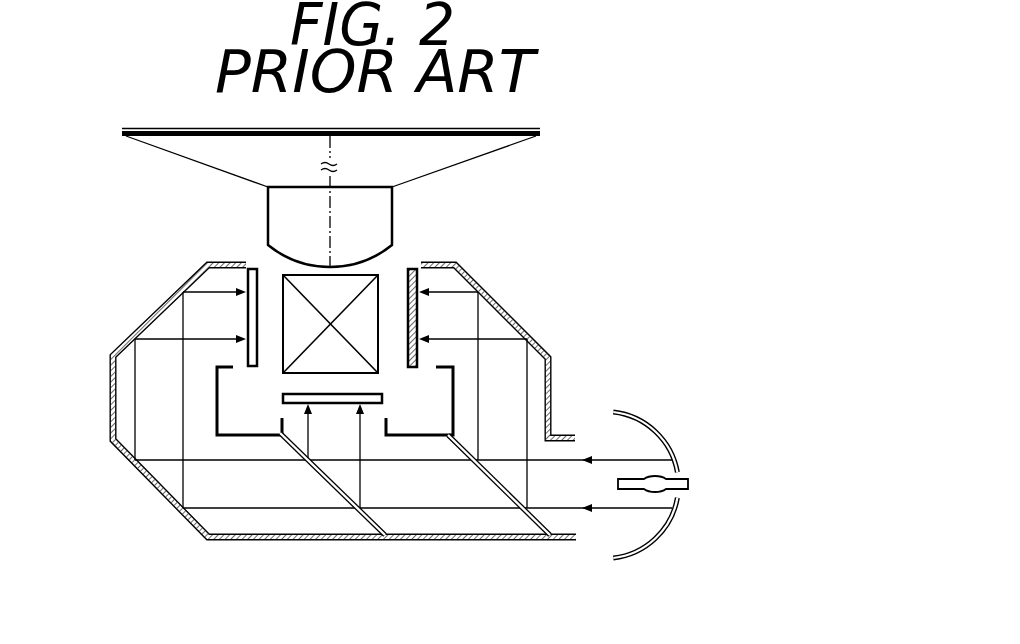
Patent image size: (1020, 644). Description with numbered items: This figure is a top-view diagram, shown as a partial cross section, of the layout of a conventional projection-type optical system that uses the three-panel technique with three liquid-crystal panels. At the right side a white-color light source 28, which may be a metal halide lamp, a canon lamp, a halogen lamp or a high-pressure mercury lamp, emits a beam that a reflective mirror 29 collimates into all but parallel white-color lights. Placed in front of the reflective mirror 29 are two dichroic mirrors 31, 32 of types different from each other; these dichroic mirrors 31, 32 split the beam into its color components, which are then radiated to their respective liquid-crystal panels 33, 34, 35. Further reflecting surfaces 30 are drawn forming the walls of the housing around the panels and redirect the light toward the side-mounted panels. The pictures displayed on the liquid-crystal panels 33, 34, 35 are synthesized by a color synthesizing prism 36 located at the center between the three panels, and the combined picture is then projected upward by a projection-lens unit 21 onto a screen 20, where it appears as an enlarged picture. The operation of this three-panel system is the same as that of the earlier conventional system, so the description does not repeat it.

The screen 20 is at (153, 131).
The projection-lens unit 21 is at (388, 205).
The white-color light source 28 is at (690, 484).
The reflective mirror 29 is at (664, 438).
The mirror 30 is at (168, 302).
The dichroic mirror 31 is at (525, 512).
The dichroic mirror 32 is at (358, 512).
The liquid-crystal panel 33 is at (410, 268).
The liquid-crystal panel 34 is at (383, 396).
The liquid-crystal panel 35 is at (257, 369).
The color synthesizing prism 36 is at (280, 290).